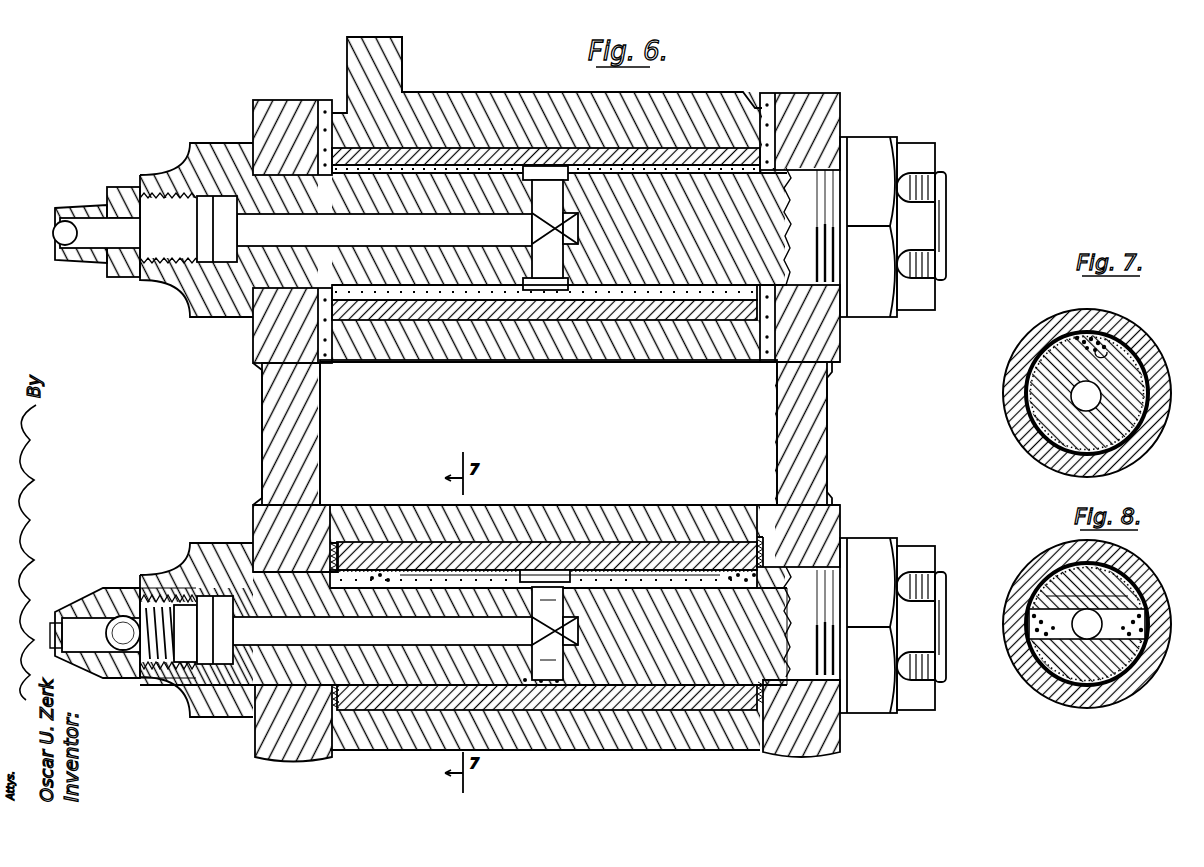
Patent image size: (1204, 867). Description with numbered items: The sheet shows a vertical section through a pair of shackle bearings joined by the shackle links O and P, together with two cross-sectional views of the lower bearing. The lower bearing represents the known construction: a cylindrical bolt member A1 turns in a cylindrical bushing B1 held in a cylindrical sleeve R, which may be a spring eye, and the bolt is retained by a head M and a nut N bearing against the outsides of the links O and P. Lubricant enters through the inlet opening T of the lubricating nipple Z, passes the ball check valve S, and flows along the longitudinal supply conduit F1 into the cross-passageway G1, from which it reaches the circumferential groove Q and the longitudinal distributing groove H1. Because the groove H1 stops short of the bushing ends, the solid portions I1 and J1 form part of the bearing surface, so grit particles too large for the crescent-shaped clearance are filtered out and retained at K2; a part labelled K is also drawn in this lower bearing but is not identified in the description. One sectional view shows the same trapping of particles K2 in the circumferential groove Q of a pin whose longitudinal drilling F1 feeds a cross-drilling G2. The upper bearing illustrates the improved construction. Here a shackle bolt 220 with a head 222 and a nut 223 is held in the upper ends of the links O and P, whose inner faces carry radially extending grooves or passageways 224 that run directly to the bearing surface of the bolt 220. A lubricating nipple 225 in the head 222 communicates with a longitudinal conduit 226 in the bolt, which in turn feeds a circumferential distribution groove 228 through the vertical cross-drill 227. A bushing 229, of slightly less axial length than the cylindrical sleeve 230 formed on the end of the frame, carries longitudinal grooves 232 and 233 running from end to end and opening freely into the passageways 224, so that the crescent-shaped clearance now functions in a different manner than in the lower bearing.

In FIG. 6, the shackle bolt 220 is at (856, 152).
In FIG. 6, the head 222 is at (208, 146).
In FIG. 6, the nut 223 is at (905, 163).
In FIG. 6, the grooves 224 is at (325, 140).
In FIG. 6, the lubricating nipple 225 is at (114, 187).
In FIG. 6, the conduit 226 is at (474, 302).
In FIG. 6, the cross-drill 227 is at (553, 293).
In FIG. 6, the circumferential distribution groove 228 is at (548, 170).
In FIG. 6, the bushing 229 is at (612, 152).
In FIG. 6, the cylindrical sleeve 230 is at (440, 92).
In FIG. 6, the longitudinal groove 232 is at (497, 150).
In FIG. 6, the longitudinal groove 233 is at (422, 302).
In FIG. 6, the cylindrical bolt member A1 is at (717, 657).
In FIG. 7, the cylindrical bolt member A1 is at (1060, 395).
In FIG. 8, the cylindrical bolt member A1 is at (1070, 589).
In FIG. 6, the cylindrical bushing B1 is at (556, 560).
In FIG. 7, the cylindrical bushing B1 is at (1150, 348).
In FIG. 8, the cylindrical bushing B1 is at (1148, 579).
In FIG. 6, the longitudinal supply conduit F1 is at (270, 634).
In FIG. 7, the longitudinal supply conduit F1 is at (1032, 443).
In FIG. 8, the longitudinal supply conduit F1 is at (1050, 664).
In FIG. 6, the cross-passageway G1 is at (560, 655).
In FIG. 8, the cross-drilling G2 is at (1030, 636).
In FIG. 6, the longitudinal distributing groove H1 is at (607, 573).
In FIG. 7, the longitudinal distributing groove H1 is at (1115, 348).
In FIG. 6, the solid portion I1 is at (330, 546).
In FIG. 6, the solid portion J1 is at (820, 550).
In FIG. 6, the piston K is at (542, 682).
In FIG. 6, the trapped particles K2 is at (383, 572).
In FIG. 7, the trapped particles K2 is at (1076, 334).
In FIG. 8, the trapped particles K2 is at (1155, 618).
In FIG. 6, the head M is at (190, 553).
In FIG. 6, the nut N is at (876, 546).
In FIG. 6, the shackle link O is at (308, 450).
In FIG. 6, the shackle link P is at (815, 452).
In FIG. 6, the circumferential groove Q is at (540, 572).
In FIG. 8, the circumferential groove Q is at (1125, 569).
In FIG. 6, the cylindrical sleeve R is at (368, 560).
In FIG. 6, the ball check valve S is at (125, 650).
In FIG. 6, the inlet opening T is at (58, 620).
In FIG. 6, the lubricating nipple Z is at (130, 590).